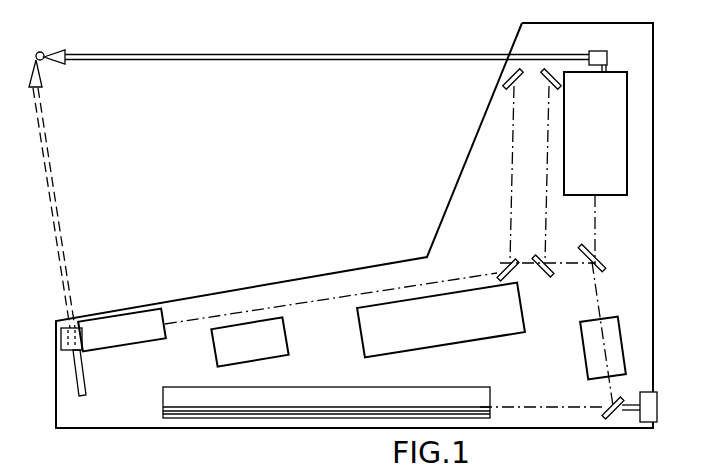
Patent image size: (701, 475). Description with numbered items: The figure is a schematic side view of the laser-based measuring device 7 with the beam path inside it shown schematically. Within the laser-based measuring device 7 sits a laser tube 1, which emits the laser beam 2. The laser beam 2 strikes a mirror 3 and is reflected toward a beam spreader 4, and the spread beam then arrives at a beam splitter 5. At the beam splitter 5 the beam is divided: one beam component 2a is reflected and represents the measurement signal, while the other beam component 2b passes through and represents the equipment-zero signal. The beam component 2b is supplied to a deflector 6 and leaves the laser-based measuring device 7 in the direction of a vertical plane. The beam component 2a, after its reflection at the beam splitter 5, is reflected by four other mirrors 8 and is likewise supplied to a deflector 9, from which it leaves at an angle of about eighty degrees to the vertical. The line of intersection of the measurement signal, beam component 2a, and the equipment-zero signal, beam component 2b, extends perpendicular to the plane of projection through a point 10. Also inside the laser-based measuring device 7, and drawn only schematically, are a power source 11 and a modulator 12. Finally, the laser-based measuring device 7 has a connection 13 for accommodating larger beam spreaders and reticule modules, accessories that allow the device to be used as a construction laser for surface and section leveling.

The laser tube 1 is at (303, 409).
The laser beam 2 is at (576, 406).
The beam component 2a is at (52, 155).
The beam component 2b is at (330, 54).
The mirror 3 is at (612, 418).
The beam spreader 4 is at (582, 345).
The beam splitter 5 is at (603, 260).
The deflector 6 is at (604, 156).
The laser-based measuring device 7 is at (360, 216).
The mirrors 8 is at (549, 88).
The deflector 9 is at (137, 322).
The point 10 is at (44, 52).
The power source 11 is at (470, 329).
The modulator 12 is at (258, 355).
The connection 13 is at (648, 423).